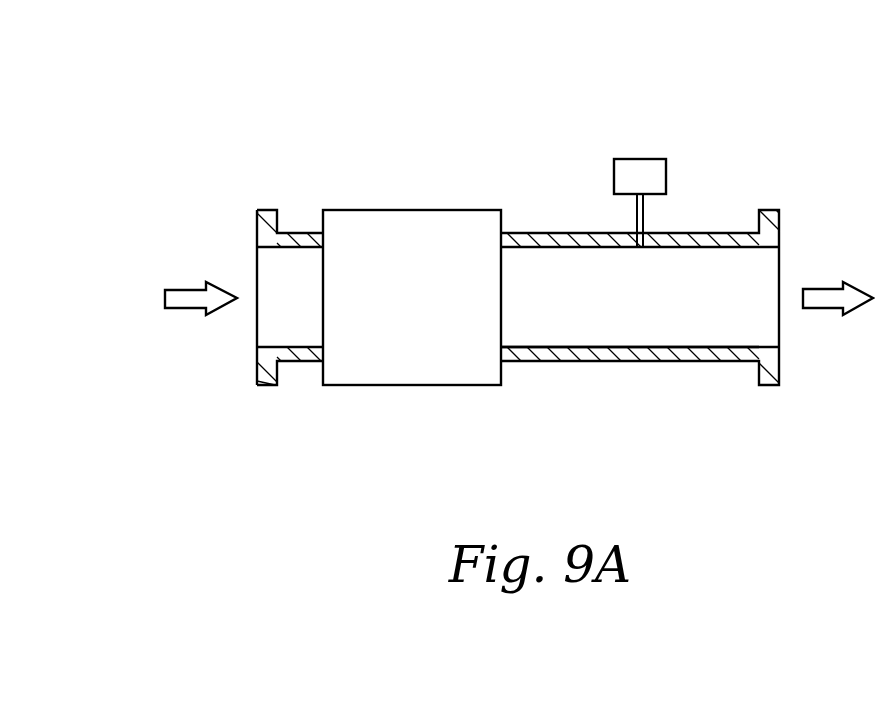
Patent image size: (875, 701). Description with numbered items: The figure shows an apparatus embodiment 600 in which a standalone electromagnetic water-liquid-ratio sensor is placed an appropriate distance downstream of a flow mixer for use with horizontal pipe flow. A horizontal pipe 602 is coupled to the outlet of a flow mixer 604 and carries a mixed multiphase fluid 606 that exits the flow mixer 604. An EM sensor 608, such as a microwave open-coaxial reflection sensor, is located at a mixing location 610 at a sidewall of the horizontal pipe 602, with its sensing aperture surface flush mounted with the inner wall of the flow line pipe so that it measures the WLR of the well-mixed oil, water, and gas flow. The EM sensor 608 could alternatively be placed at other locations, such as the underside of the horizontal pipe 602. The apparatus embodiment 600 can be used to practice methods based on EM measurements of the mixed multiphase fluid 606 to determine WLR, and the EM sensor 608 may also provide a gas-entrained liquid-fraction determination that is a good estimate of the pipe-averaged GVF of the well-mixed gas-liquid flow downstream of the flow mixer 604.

The apparatus embodiment 600 is at (312, 72).
The horizontal pipe 602 is at (580, 362).
The flow mixer 604 is at (404, 210).
The mixed multiphase fluid 606 is at (706, 330).
The EM sensor 608 is at (640, 160).
The mixing location 610 is at (639, 249).